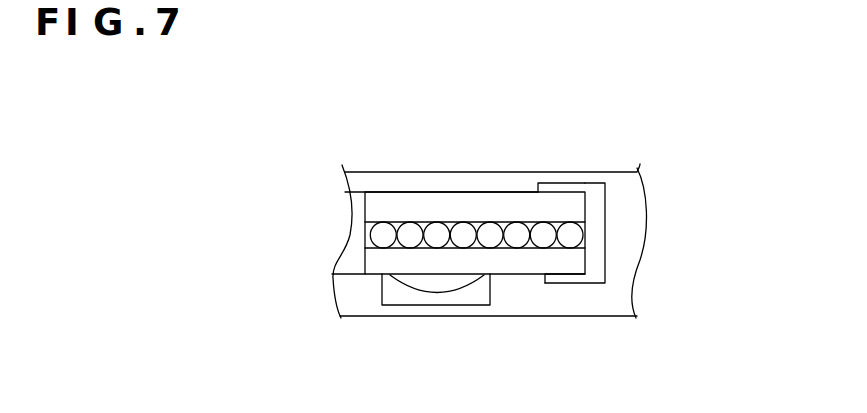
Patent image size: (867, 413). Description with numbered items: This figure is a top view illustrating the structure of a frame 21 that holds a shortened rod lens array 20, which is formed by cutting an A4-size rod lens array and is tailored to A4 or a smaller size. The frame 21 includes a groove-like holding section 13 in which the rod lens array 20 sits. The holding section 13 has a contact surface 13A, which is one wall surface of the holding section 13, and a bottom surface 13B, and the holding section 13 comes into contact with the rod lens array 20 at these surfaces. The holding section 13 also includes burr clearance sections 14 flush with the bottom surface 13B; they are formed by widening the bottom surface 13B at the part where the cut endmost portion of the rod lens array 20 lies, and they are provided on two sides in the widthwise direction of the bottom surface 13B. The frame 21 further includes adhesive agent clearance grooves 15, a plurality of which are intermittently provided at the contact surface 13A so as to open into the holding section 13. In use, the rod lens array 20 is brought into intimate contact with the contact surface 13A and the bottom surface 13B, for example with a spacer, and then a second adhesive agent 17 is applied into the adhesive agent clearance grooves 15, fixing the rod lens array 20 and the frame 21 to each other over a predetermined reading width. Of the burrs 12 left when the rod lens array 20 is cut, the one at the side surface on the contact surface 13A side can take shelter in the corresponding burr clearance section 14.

The holding section 13 is at (358, 212).
The contact surface 13A is at (333, 263).
The bottom surface 13B is at (348, 247).
The rod lens array 20 is at (447, 207).
The burr clearance section 14 is at (560, 188).
The burr 12 is at (581, 190).
The frame 21 is at (620, 168).
The adhesive agent clearance groove 15 is at (482, 293).
The second adhesive agent 17 is at (425, 300).